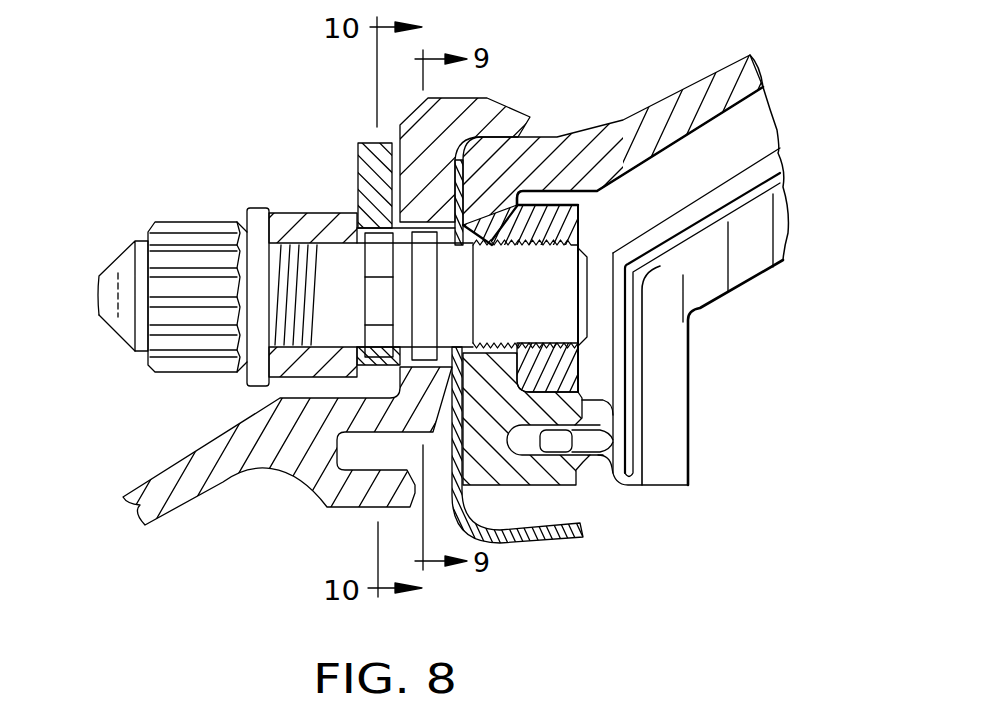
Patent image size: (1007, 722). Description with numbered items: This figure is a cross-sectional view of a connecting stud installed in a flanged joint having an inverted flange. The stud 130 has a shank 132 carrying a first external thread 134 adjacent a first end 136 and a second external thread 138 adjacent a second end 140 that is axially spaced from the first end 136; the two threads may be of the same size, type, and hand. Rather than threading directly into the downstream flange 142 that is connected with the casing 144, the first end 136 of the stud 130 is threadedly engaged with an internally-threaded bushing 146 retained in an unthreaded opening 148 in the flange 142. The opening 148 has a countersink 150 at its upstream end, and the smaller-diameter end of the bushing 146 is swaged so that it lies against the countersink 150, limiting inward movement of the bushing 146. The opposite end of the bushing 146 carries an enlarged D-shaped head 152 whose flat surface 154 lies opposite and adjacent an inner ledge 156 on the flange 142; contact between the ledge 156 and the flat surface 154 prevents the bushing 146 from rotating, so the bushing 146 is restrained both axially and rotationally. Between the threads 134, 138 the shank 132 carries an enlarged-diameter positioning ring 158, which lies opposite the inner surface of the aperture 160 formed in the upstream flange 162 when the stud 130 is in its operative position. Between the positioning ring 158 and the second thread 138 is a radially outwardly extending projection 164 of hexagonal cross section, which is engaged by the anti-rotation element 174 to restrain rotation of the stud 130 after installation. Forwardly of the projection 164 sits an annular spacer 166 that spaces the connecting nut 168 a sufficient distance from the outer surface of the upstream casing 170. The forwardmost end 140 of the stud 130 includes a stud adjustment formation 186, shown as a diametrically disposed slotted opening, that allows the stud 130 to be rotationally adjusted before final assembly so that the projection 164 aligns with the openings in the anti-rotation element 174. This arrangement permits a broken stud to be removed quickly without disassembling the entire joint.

The stud 130 is at (565, 296).
The shank 132 is at (343, 262).
The first external thread 134 is at (580, 325).
The first end 136 is at (580, 303).
The second external thread 138 is at (133, 265).
The second end 140 is at (112, 328).
The downstream flange 142 is at (518, 160).
The casing 144 is at (718, 82).
The internally-threaded bushing 146 is at (582, 235).
The unthreaded opening 148 is at (620, 174).
The countersink 150 is at (465, 352).
The D-shaped head 152 is at (580, 352).
The flat surface 154 is at (597, 413).
The inner ledge 156 is at (580, 380).
The positioning ring 158 is at (425, 272).
The aperture 160 is at (428, 365).
The upstream flange 162 is at (447, 108).
The projection 164 is at (378, 277).
The annular spacer 166 is at (293, 228).
The connecting nut 168 is at (190, 238).
The upstream casing 170 is at (204, 487).
The anti-rotation element 174 is at (372, 152).
The stud adjustment formation 186 is at (100, 262).